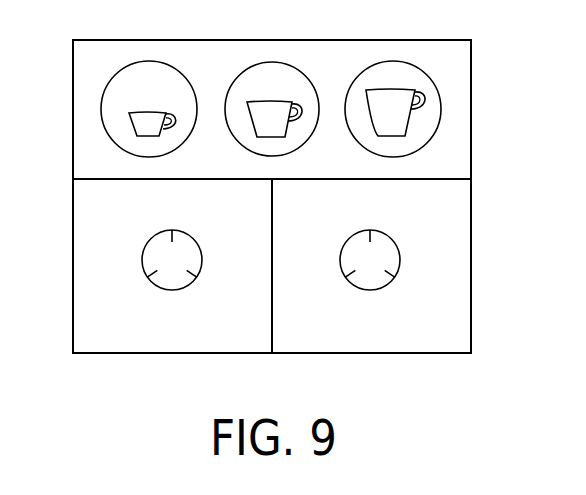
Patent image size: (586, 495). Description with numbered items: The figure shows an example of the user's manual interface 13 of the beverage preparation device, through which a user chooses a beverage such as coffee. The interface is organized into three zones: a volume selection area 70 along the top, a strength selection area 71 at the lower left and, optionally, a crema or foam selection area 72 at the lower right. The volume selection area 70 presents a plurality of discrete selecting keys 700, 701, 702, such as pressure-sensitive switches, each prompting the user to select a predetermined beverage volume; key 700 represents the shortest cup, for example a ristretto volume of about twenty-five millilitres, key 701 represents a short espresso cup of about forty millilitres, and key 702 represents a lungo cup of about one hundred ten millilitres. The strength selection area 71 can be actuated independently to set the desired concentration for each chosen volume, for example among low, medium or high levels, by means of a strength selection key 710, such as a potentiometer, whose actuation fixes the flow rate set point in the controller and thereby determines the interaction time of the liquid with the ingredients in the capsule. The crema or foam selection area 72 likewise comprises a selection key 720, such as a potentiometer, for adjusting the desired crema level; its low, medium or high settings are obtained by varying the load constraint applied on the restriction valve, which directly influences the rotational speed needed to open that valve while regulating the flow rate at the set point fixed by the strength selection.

The user's manual interface 13 is at (480, 336).
The volume selection area 70 is at (471, 107).
The selecting key 700 is at (150, 61).
The selecting key 701 is at (272, 62).
The selecting key 702 is at (395, 62).
The strength selection area 71 is at (176, 353).
The strength selection key 710 is at (142, 259).
The crema or foam selection area 72 is at (375, 353).
The selection key 720 is at (400, 258).